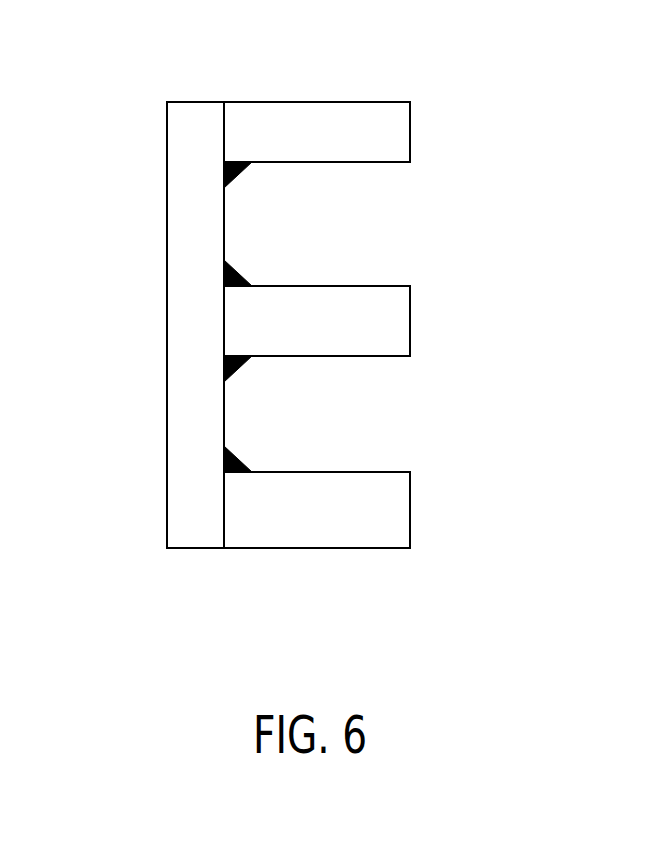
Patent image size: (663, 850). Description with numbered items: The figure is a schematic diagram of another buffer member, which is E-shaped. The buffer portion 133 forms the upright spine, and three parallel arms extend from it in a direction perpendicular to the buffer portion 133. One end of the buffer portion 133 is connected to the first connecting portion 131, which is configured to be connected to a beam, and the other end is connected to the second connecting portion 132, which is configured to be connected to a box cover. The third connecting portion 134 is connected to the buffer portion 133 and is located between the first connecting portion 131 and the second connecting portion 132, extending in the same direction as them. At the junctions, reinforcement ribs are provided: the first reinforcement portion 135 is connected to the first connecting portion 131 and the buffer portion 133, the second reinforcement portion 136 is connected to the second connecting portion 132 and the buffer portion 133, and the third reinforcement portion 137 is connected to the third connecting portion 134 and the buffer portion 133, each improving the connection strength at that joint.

The first connecting portion 131 is at (345, 525).
The second connecting portion 132 is at (330, 137).
The buffer portion 133 is at (200, 286).
The third connecting portion 134 is at (367, 322).
The first reinforcement portion 135 is at (224, 462).
The second reinforcement portion 136 is at (238, 162).
The third reinforcement portion 137 is at (224, 354).